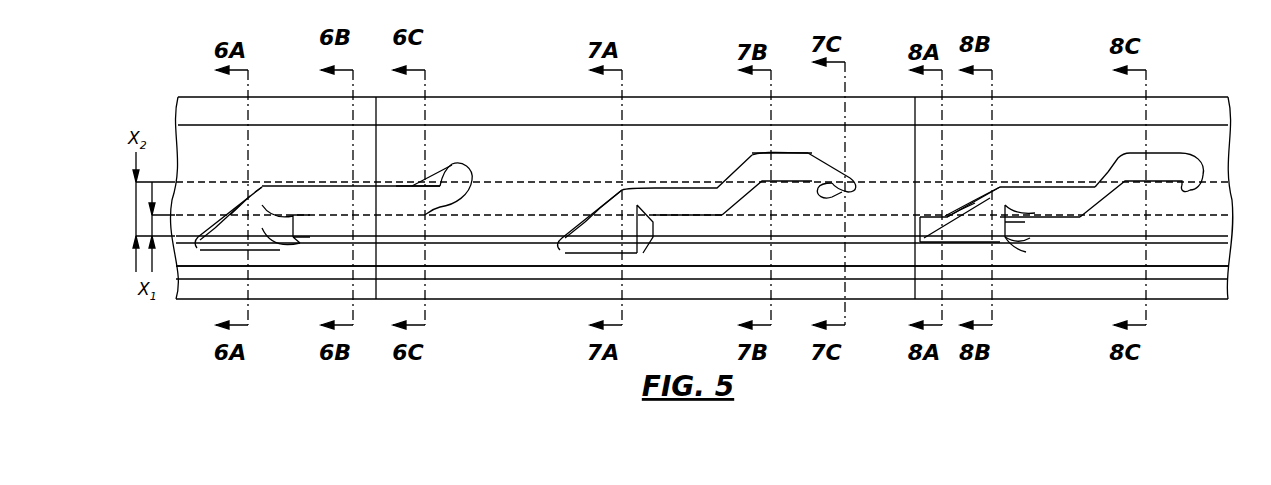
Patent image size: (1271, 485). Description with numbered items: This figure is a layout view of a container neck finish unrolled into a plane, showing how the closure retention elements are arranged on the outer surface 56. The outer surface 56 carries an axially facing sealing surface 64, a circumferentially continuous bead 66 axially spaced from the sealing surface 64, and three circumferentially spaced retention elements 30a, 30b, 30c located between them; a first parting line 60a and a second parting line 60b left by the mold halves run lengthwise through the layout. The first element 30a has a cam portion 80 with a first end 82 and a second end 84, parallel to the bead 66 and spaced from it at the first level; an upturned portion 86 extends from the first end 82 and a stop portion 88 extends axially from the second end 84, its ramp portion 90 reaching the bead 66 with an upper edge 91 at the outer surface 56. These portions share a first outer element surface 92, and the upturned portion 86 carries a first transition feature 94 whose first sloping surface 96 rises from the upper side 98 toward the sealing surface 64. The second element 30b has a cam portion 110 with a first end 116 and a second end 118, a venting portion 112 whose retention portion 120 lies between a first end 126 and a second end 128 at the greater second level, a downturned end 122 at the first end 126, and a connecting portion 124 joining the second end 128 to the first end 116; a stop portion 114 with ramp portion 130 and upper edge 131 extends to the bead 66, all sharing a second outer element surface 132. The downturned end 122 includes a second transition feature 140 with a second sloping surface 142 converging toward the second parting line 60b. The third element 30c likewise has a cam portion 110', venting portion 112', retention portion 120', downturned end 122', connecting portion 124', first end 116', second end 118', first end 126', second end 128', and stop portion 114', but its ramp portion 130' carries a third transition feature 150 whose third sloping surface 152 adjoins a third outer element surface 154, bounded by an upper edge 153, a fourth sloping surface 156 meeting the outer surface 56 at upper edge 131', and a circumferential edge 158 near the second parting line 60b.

The first element 30a is at (300, 182).
The second element 30b is at (675, 182).
The third element 30c is at (1048, 182).
The outer surface 56 is at (1212, 176).
The first parting line 60a is at (368, 115).
The second parting line 60b is at (906, 98).
The sealing surface 64 is at (1166, 97).
The bead 66 is at (204, 262).
The cam portion 80 is at (332, 187).
The first end 82 is at (412, 202).
The second end 84 is at (270, 185).
The upturned portion 86 is at (445, 197).
The stop portion 88 is at (228, 220).
The ramp portion 90 is at (211, 224).
The upper edge 91 is at (220, 210).
The first outer element surface 92 is at (282, 248).
The first transition feature 94 is at (458, 150).
The first sloping surface 96 is at (436, 172).
The upper side 98 is at (402, 184).
The cam portion 110 is at (663, 232).
The venting portion 112 is at (782, 83).
The stop portion 114 is at (606, 193).
The first end 116 is at (703, 164).
The second end 118 is at (646, 174).
The retention portion 120 is at (808, 194).
The downturned end 122 is at (830, 133).
The connecting portion 124 is at (761, 136).
The first end 126 is at (817, 140).
The second end 128 is at (761, 217).
The ramp portion 130 is at (554, 194).
The upper edge 131 is at (564, 176).
The second outer element surface 132 is at (712, 200).
The second transition feature 140 is at (850, 188).
The second sloping surface 142 is at (848, 194).
The third transition feature 150 is at (962, 237).
The third sloping surface 152 is at (920, 236).
The upper edge 153 is at (944, 200).
The third outer element surface 154 is at (1026, 222).
The fourth sloping surface 156 is at (968, 208).
The circumferential edge 158 is at (917, 235).
The cam portion 110' is at (1050, 161).
The venting portion 112' is at (1164, 203).
The stop portion 114' is at (1038, 250).
The first end 116' is at (1079, 164).
The second end 118' is at (1015, 186).
The retention portion 120' is at (1159, 129).
The downturned end 122' is at (1207, 202).
The connecting portion 124' is at (1117, 152).
The first end 126' is at (1195, 152).
The second end 128' is at (1120, 202).
The ramp portion 130' is at (920, 178).
The upper edge 131' is at (1002, 134).